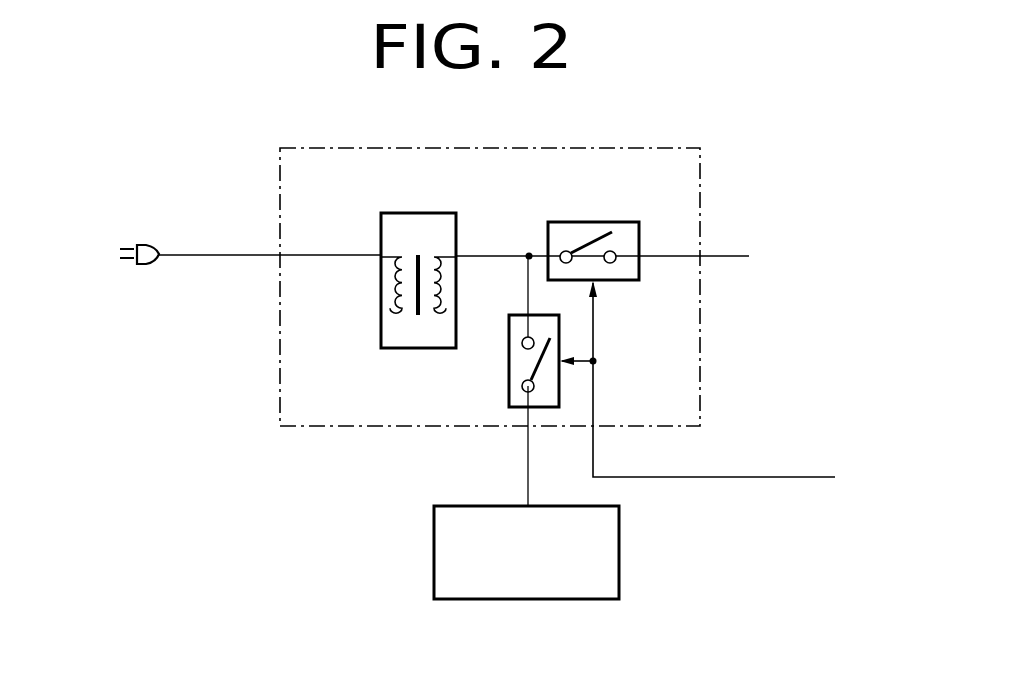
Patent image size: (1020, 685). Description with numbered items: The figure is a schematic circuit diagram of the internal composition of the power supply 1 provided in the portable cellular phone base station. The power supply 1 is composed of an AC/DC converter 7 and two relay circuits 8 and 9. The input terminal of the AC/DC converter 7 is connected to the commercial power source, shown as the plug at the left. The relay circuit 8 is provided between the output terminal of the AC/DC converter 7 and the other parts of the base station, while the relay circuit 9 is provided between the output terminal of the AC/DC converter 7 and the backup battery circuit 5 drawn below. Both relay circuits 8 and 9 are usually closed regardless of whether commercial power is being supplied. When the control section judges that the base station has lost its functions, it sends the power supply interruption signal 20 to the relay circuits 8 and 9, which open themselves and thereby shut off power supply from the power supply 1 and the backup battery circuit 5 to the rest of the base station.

The power supply 1 is at (642, 148).
The backup battery circuit 5 is at (619, 550).
The AC/DC converter 7 is at (381, 318).
The relay circuit 8 is at (593, 220).
The relay circuit 9 is at (509, 385).
The power supply interruption signal 20 is at (742, 478).